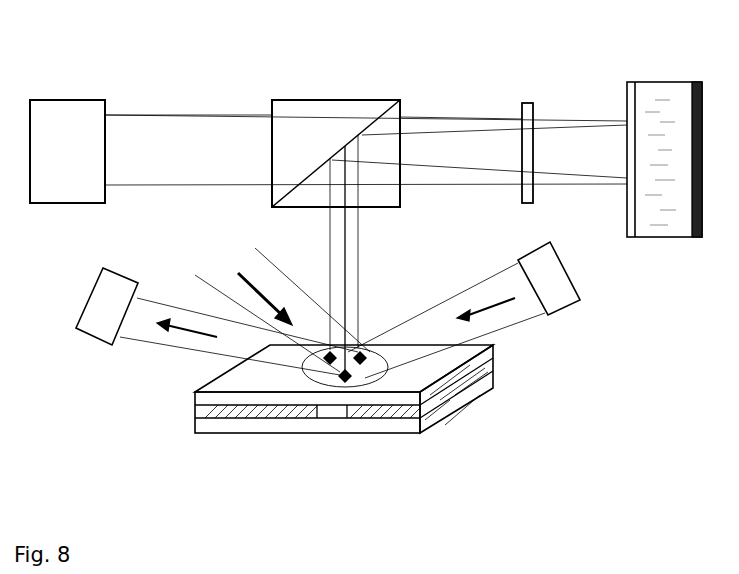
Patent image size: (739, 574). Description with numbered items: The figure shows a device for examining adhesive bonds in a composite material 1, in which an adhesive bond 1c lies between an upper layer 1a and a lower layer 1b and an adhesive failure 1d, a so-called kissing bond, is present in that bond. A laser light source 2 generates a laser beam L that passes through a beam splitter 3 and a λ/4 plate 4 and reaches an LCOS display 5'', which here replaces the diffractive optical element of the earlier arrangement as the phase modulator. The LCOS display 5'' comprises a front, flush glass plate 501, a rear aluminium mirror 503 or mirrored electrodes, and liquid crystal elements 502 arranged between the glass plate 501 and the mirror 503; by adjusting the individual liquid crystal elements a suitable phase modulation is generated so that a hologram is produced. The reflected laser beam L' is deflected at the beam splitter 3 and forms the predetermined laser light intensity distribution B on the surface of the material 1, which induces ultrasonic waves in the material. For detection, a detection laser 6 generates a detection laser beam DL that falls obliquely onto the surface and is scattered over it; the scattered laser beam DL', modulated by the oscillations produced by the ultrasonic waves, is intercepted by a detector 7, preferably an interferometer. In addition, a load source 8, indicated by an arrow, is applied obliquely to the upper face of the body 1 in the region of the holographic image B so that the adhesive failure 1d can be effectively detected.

The material 1 is at (238, 382).
The upper layer 1a is at (202, 398).
The lower layer 1b is at (203, 425).
The adhesive bond 1c is at (237, 412).
The adhesive failure 1d is at (335, 412).
The laser light source 2 is at (57, 117).
The beam splitter 3 is at (320, 108).
The λ/4 plate 4 is at (522, 103).
The LCOS display 5'' is at (664, 188).
The glass plate 501 is at (632, 92).
The liquid crystal elements 502 is at (658, 93).
The aluminium mirror 503 is at (702, 87).
The detection laser 6 is at (562, 283).
The detector 7 is at (108, 293).
The load source 8 is at (233, 293).
The laser light intensity distributions B is at (352, 380).
The laser beam L is at (188, 93).
The reflected laser beam L' is at (461, 189).
The detection laser beam DL is at (531, 345).
The scattered laser beam DL' is at (144, 352).